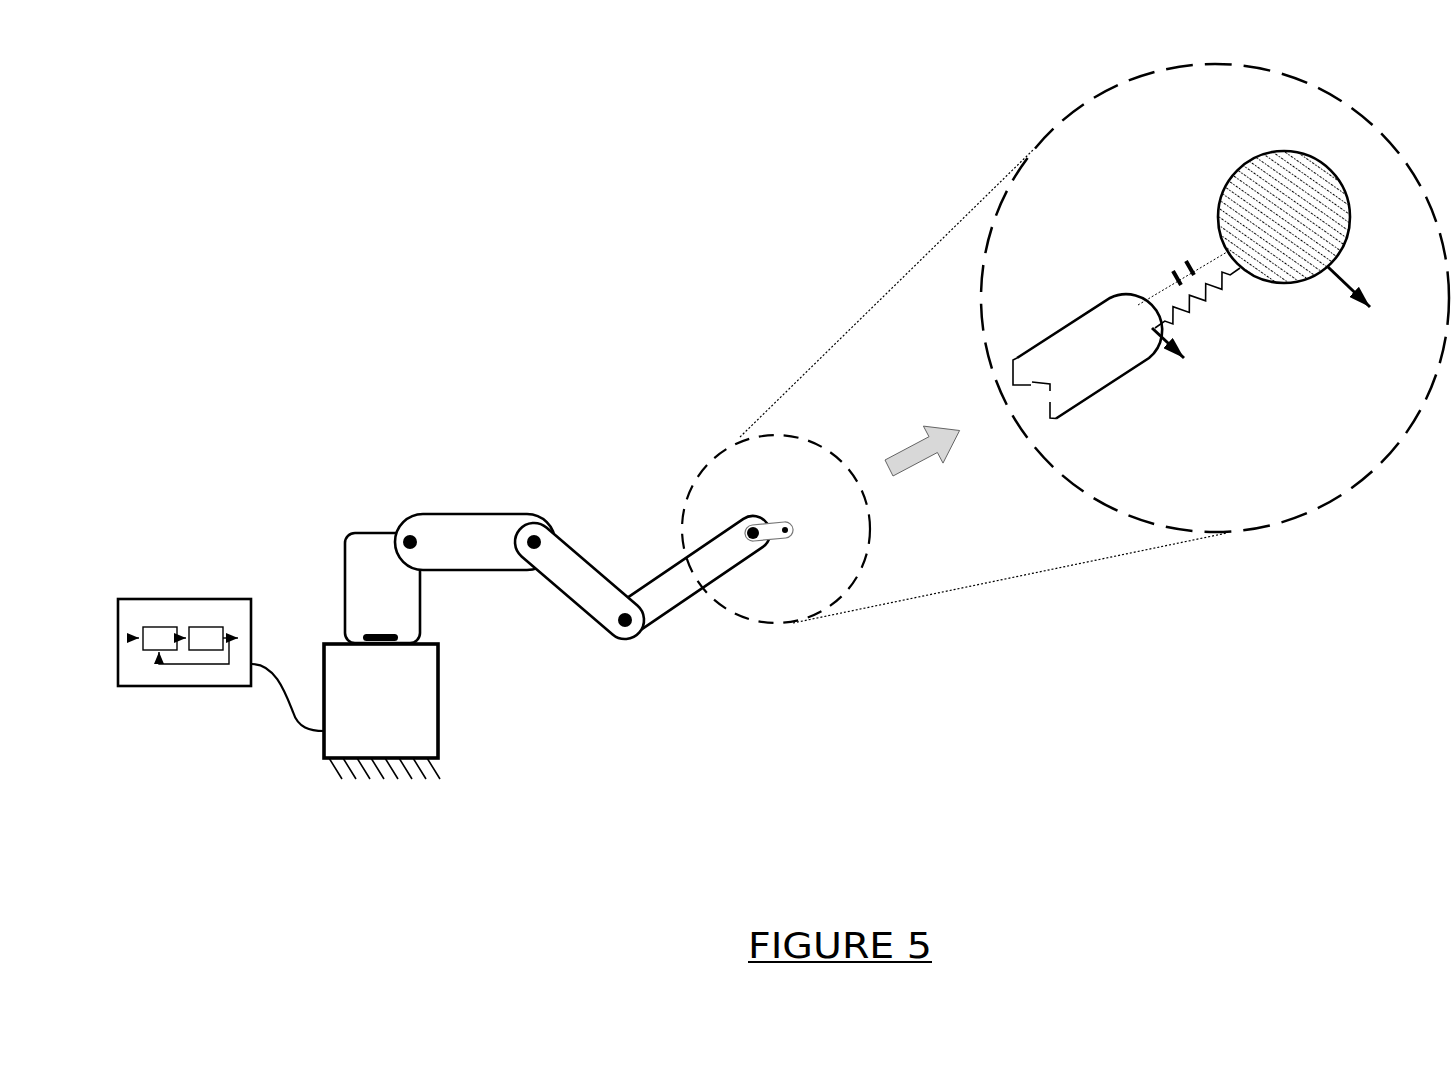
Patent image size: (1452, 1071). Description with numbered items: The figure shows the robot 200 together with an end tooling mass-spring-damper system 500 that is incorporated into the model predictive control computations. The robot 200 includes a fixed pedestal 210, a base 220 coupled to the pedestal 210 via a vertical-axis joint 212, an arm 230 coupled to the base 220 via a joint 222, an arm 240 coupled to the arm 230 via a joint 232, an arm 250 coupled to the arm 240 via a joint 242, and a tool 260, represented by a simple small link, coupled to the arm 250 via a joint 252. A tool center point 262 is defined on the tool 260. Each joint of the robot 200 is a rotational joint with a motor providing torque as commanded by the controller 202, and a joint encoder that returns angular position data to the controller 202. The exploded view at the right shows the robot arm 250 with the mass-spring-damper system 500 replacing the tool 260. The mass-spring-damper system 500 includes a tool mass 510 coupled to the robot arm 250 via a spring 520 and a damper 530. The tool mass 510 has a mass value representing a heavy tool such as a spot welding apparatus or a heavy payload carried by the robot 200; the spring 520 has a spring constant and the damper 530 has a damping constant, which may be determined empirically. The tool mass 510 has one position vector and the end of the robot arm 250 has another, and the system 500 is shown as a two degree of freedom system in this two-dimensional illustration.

The robot 200 is at (832, 783).
The controller 202 is at (184, 598).
The fixed pedestal 210 is at (402, 724).
The vertical-axis joint 212 is at (380, 633).
The base 220 is at (342, 603).
The joint 222 is at (408, 536).
The arm 230 is at (447, 513).
The joint 232 is at (540, 536).
The arm 240 is at (585, 550).
The joint 242 is at (623, 636).
The arm 250 is at (718, 584).
The joint 252 is at (748, 527).
The tool 260 is at (767, 523).
The tool center point 262 is at (787, 538).
The mass-spring-damper system 500 is at (1255, 582).
The tool mass 510 is at (1248, 160).
The spring 520 is at (1228, 298).
The damper 530 is at (1160, 280).